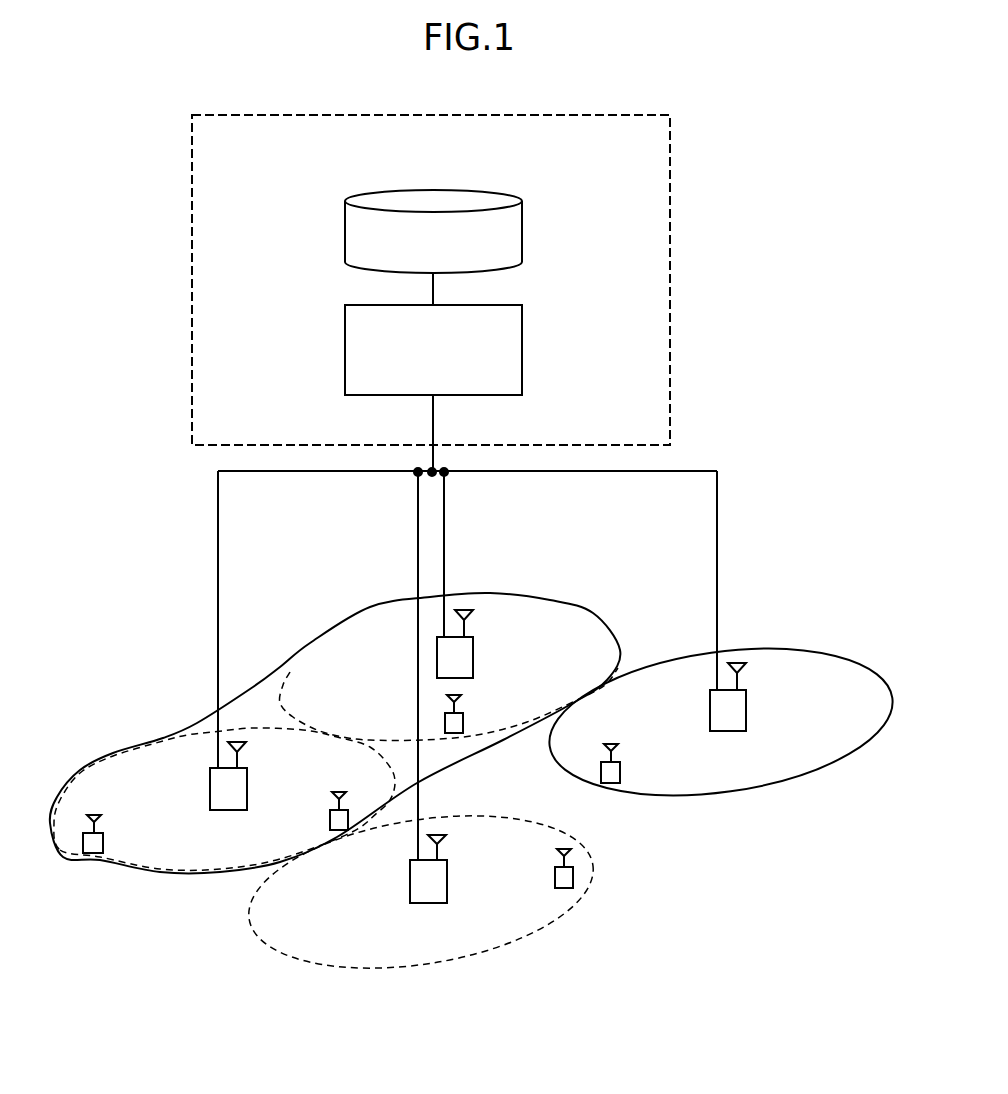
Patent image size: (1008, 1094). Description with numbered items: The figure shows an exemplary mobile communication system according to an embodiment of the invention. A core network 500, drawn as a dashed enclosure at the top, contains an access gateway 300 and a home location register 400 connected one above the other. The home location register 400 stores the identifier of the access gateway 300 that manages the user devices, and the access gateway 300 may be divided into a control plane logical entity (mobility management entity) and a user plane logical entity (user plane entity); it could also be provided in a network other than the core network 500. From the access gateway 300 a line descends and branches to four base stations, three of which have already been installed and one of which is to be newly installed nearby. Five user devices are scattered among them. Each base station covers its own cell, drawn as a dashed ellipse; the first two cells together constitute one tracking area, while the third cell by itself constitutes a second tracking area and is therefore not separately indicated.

The core network 500 is at (672, 245).
The home location register 400 is at (522, 230).
The access gateway 300 is at (522, 342).